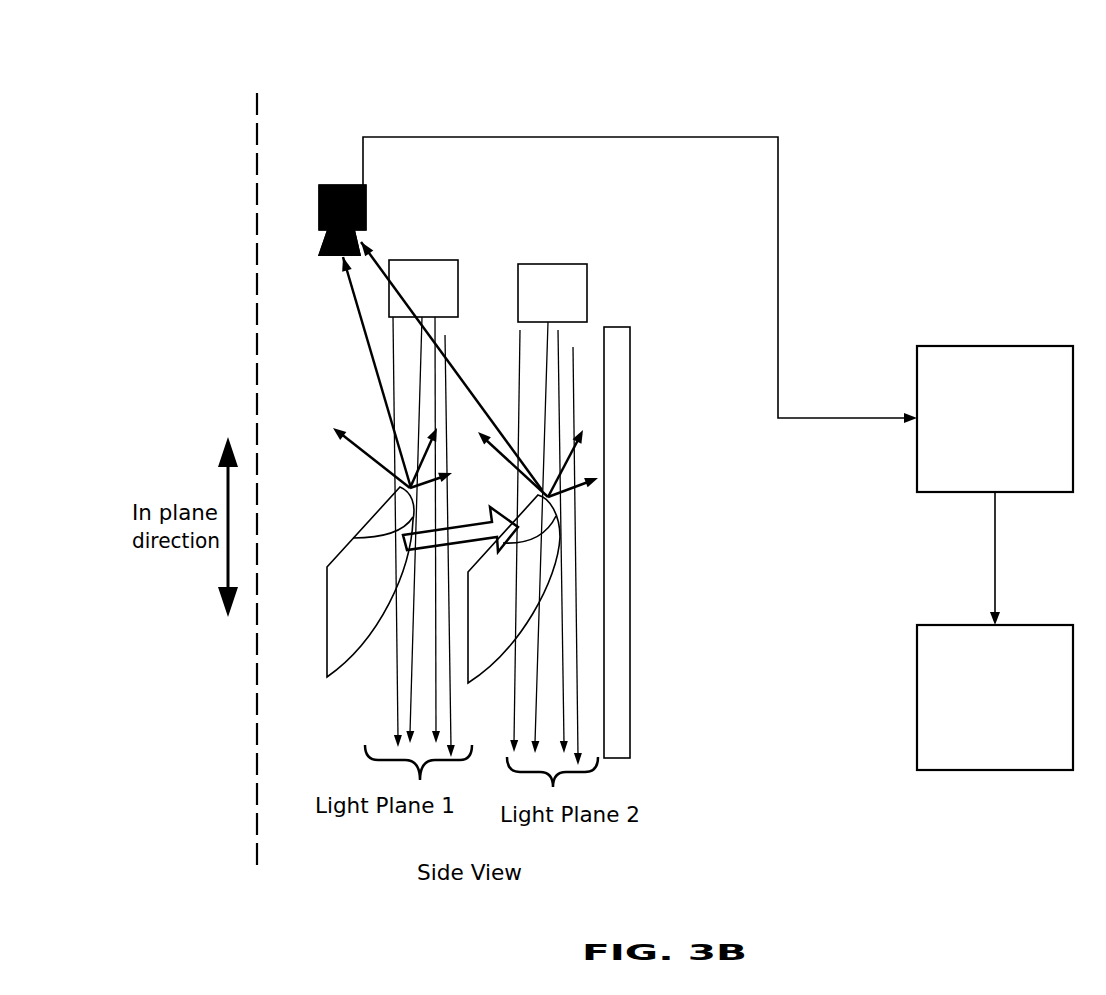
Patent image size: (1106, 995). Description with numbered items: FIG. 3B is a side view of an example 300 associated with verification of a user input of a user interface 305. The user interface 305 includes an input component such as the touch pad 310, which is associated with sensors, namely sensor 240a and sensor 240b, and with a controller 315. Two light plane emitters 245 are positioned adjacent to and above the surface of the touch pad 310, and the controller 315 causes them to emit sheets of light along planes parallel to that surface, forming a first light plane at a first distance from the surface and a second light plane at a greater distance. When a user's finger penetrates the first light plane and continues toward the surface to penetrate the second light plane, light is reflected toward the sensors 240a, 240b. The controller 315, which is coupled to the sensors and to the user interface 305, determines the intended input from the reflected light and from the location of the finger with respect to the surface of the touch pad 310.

The example 300 is at (148, 64).
The sensor 240a is at (339, 154).
The sensor 240b is at (345, 185).
The light plane emitter 245 is at (588, 227).
The touch pad 310 is at (631, 510).
The controller 315 is at (1017, 447).
The user interface 305 is at (1017, 740).